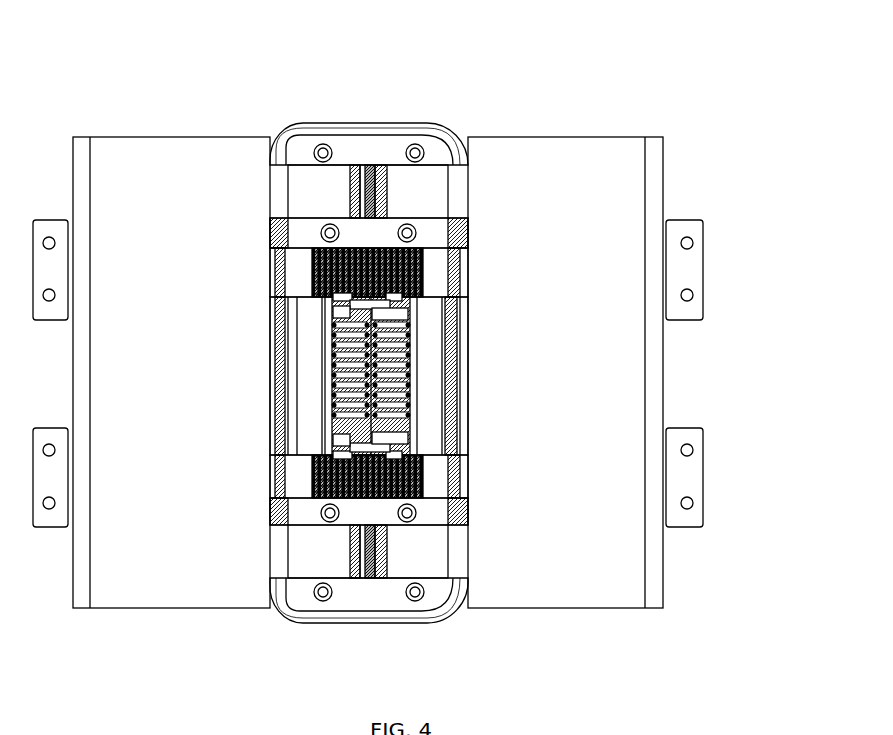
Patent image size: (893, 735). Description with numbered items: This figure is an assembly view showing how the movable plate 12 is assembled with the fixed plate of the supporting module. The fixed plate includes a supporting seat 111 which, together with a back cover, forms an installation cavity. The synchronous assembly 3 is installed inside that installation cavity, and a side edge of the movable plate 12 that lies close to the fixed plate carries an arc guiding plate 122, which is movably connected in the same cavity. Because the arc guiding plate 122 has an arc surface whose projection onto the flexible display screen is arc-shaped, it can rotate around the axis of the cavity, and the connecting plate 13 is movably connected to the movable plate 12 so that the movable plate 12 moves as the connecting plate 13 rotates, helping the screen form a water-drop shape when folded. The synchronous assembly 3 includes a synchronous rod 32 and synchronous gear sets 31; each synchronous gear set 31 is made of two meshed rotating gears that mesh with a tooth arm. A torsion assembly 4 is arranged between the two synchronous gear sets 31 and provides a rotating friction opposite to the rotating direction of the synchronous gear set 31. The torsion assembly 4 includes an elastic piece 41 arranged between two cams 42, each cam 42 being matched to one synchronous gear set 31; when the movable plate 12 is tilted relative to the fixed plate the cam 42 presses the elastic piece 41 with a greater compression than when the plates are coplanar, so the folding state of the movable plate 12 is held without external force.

The movable plate 12 is at (193, 158).
The connecting plate 13 is at (48, 232).
The supporting seat 111 is at (383, 150).
The arc guiding plate 122 is at (303, 190).
The synchronous assembly 3 is at (522, 284).
The synchronous gear set 31 is at (292, 308).
The synchronous rod 32 is at (390, 248).
The torsion assembly 4 is at (570, 402).
The elastic piece 41 is at (398, 385).
The cam 42 is at (383, 308).